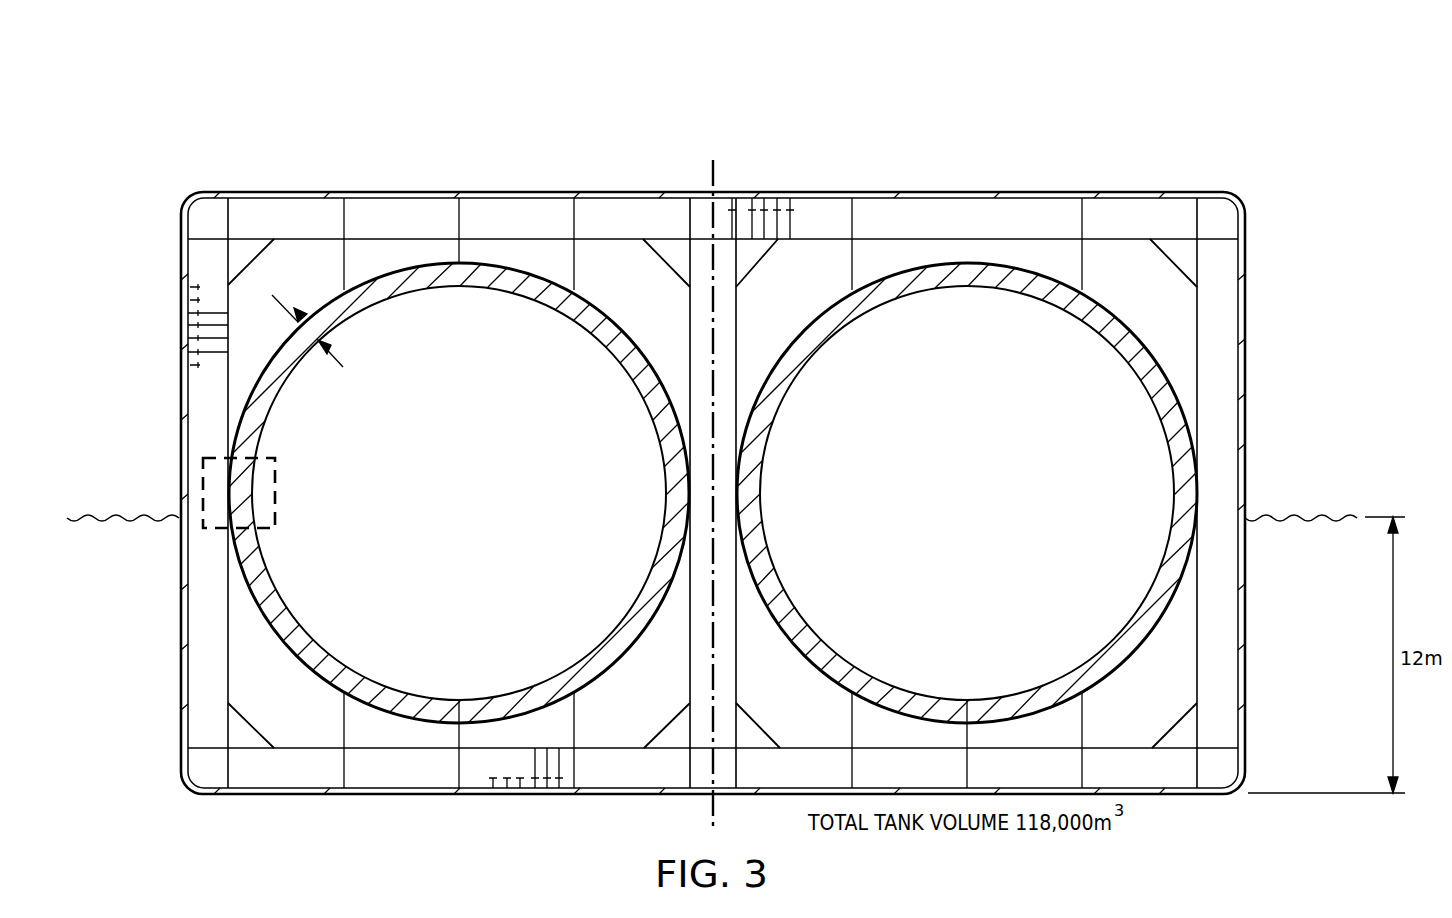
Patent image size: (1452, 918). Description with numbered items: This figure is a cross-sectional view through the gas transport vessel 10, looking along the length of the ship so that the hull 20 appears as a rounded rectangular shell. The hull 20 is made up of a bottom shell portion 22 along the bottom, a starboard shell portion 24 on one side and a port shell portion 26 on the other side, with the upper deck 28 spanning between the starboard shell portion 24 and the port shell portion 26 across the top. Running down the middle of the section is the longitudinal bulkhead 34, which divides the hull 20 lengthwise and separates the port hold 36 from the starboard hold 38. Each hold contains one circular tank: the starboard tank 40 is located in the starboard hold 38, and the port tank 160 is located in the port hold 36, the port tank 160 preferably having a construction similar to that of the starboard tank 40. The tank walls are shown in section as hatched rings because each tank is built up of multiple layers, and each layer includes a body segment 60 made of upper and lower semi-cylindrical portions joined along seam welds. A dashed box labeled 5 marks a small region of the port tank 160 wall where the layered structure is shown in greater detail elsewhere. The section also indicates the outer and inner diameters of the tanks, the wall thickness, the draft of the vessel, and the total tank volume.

The gas transport vessel 10 is at (376, 100).
The hull 20 is at (1247, 432).
The bottom shell portion 22 is at (438, 793).
The starboard shell portion 24 is at (1243, 306).
The port shell portion 26 is at (182, 425).
The upper deck 28 is at (1012, 192).
The longitudinal bulkhead 34 is at (737, 320).
The port hold 36 is at (285, 255).
The starboard hold 38 is at (1209, 378).
The starboard tank 40 is at (980, 541).
The body segment 60 is at (1105, 311).
The port tank 160 is at (600, 312).
The detail region 5 is at (277, 495).